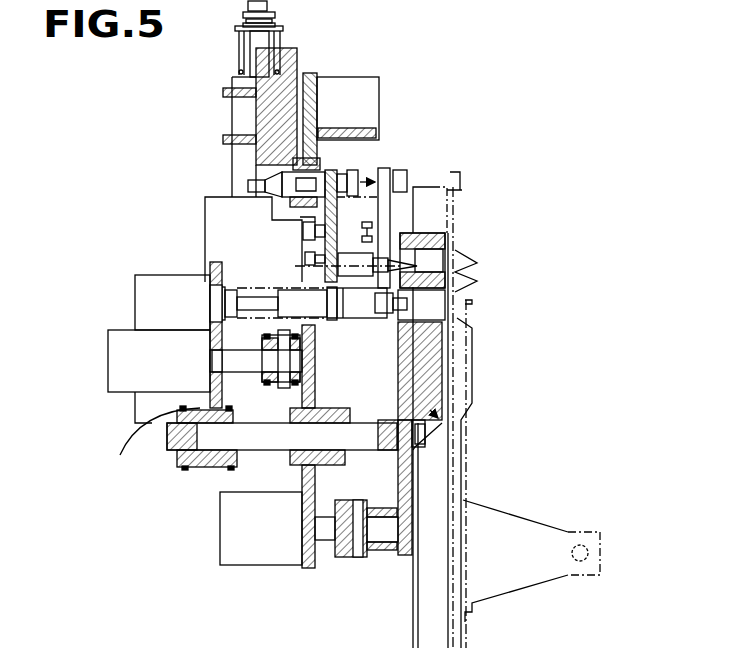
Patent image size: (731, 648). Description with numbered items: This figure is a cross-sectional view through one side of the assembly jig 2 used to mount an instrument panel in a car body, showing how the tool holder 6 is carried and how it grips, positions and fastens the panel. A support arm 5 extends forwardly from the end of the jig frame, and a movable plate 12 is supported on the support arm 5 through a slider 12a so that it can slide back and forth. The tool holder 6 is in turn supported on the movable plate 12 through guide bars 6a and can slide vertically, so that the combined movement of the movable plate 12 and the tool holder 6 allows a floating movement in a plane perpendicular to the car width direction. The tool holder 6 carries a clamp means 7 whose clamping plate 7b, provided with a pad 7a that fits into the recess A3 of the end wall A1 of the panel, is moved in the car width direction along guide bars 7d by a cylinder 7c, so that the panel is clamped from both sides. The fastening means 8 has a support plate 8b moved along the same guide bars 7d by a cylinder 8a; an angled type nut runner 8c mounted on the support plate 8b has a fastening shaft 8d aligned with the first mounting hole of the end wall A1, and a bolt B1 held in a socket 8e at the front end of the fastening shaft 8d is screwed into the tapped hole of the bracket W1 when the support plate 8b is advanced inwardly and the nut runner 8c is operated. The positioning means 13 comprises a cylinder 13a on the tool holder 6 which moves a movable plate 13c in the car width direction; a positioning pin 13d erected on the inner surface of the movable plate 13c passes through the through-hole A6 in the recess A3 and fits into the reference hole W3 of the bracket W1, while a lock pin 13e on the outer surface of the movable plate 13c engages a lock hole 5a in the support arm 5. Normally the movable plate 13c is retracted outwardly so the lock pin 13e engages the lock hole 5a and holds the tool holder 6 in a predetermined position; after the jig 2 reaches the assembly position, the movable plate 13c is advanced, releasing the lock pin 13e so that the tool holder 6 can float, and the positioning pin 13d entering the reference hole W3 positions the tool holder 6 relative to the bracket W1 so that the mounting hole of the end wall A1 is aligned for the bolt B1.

The assembly jig 2 is at (420, 172).
The support arm 5 is at (330, 112).
The lock hole 5a is at (340, 133).
The tool holder 6 is at (315, 386).
The guide bar 6a is at (243, 62).
The clamp means 7 is at (448, 407).
The pad 7a is at (432, 428).
The clamping plate 7b is at (400, 497).
The cylinder 7c is at (262, 565).
The guide bar 7d is at (205, 467).
The fastening means 8 is at (350, 322).
The cylinder 8a is at (120, 385).
The support plate 8b is at (175, 420).
The angled type nut runner 8c is at (140, 305).
The fastening shaft 8d is at (250, 300).
The socket 8e is at (376, 320).
The movable plate 12 is at (240, 108).
The slider 12a is at (300, 72).
The positioning means 13 is at (290, 241).
The cylinder 13a is at (205, 240).
The movable plate 13c is at (340, 178).
The positioning pin 13d is at (412, 255).
The lock pin 13e is at (250, 186).
The end wall A1 is at (455, 178).
The recess A3 is at (440, 413).
The through-hole A6 is at (458, 262).
The bolt B1 is at (455, 325).
The bracket W1 is at (465, 644).
The reference hole W3 is at (460, 282).